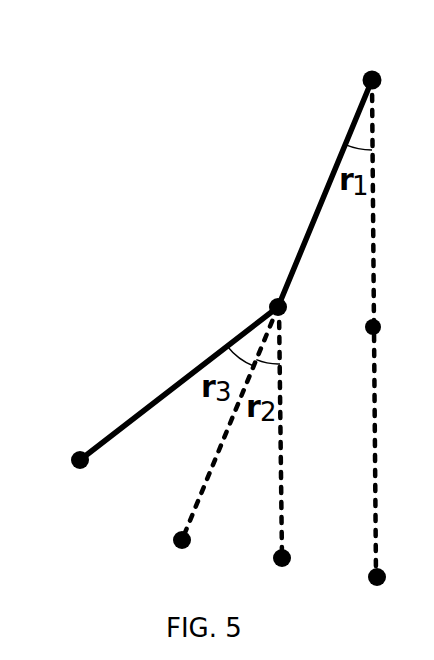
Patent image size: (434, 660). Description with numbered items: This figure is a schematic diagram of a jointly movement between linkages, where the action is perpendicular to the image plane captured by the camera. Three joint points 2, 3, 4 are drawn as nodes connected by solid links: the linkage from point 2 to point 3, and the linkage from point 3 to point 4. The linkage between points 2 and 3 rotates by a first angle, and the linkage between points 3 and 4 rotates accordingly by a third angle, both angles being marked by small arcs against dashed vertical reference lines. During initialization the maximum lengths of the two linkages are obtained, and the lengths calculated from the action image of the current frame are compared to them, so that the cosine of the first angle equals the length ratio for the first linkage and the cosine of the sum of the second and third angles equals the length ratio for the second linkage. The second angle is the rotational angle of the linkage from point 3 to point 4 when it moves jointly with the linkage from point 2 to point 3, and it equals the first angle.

The joint point 2 is at (370, 54).
The joint point 3 is at (263, 283).
The joint point 4 is at (56, 447).